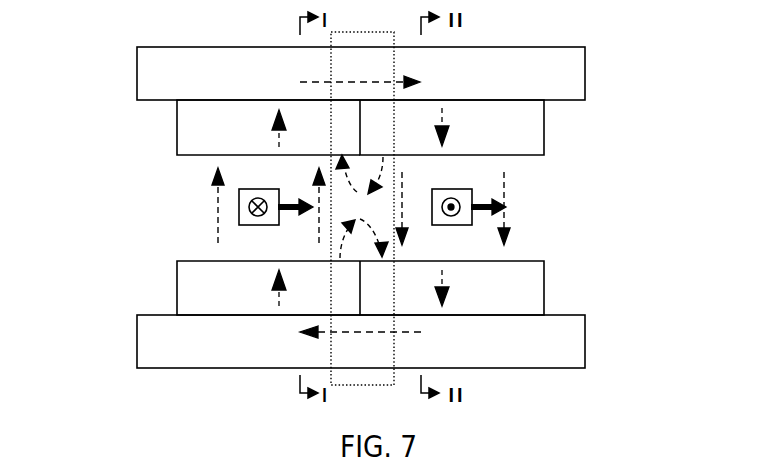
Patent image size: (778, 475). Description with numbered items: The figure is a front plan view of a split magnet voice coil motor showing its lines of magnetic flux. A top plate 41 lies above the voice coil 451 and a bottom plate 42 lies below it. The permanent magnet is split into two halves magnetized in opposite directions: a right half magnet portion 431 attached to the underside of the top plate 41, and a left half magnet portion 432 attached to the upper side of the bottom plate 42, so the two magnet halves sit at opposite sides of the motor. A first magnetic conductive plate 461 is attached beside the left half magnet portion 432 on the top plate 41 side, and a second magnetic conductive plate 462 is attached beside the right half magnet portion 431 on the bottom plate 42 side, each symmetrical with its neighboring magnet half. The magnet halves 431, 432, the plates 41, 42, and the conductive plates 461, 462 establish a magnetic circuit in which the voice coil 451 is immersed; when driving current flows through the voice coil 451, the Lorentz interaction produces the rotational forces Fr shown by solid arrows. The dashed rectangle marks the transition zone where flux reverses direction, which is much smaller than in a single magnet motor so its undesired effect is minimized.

The top plate 41 is at (563, 76).
The bottom plate 42 is at (563, 346).
The right half magnet portion 431 is at (537, 130).
The left half magnet portion 432 is at (200, 292).
The voice coil 451 is at (470, 193).
The first magnetic conductive plate 461 is at (200, 130).
The second magnetic conductive plate 462 is at (537, 292).